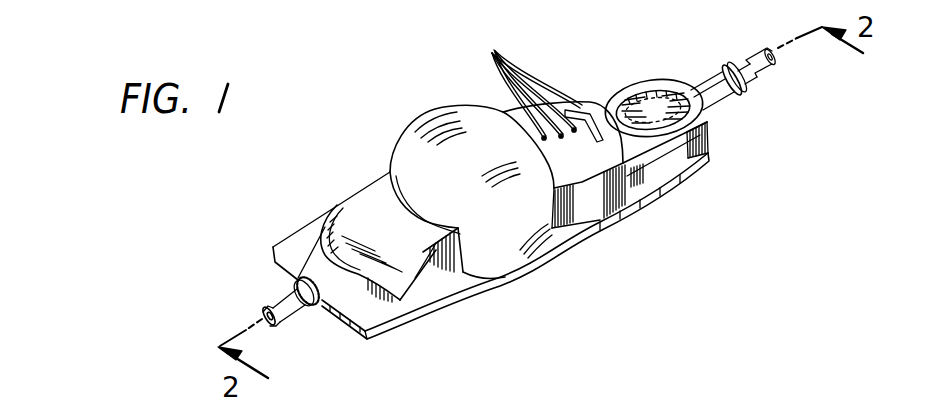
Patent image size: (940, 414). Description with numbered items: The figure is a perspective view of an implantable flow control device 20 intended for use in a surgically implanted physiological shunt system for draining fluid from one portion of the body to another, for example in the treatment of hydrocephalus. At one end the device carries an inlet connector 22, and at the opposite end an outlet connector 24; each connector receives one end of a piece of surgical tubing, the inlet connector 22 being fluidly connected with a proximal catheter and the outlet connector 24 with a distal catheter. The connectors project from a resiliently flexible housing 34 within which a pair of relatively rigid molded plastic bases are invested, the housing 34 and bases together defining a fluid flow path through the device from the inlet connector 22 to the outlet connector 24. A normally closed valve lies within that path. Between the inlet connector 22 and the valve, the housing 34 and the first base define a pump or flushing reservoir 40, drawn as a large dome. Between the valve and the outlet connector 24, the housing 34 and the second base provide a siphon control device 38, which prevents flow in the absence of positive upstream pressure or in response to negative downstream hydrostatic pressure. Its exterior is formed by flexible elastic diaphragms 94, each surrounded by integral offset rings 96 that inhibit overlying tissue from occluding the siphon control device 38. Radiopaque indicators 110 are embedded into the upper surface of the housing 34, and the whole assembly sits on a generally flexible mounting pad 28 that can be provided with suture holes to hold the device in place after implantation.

The flow control device 20 is at (400, 118).
The inlet connector 22 is at (280, 304).
The outlet connector 24 is at (756, 68).
The mounting pad 28 is at (385, 313).
The housing 34 is at (410, 162).
The siphon control device 38 is at (650, 84).
The pump or flushing reservoir 40 is at (486, 238).
The flexible elastic diaphragms 94 is at (648, 118).
The offset rings 96 is at (704, 125).
The radiopaque indicators 110 is at (492, 52).